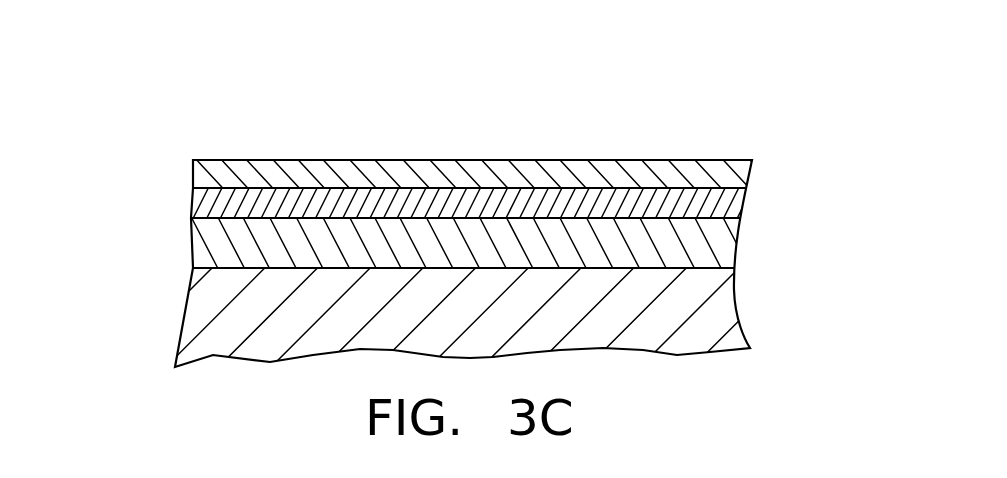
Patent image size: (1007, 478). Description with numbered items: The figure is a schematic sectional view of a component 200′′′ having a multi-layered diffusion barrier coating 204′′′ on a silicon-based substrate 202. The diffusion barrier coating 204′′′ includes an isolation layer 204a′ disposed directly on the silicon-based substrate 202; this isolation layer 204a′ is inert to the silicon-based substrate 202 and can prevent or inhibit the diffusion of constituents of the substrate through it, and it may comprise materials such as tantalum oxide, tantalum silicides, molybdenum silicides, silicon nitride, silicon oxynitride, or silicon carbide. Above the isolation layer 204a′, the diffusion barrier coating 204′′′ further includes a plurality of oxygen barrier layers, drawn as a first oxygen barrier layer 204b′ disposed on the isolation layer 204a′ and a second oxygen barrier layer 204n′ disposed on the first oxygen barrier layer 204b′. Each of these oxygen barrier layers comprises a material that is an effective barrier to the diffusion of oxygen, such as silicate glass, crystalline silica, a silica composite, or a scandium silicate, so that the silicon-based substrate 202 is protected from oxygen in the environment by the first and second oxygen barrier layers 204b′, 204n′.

The component 200′′′ is at (703, 102).
The multi-layered diffusion barrier coating 204′′′ is at (155, 160).
The second oxygen barrier layer 204n′ is at (723, 175).
The first oxygen barrier layer 204b′ is at (722, 207).
The isolation layer 204a′ is at (717, 253).
The silicon-based substrate 202 is at (720, 305).